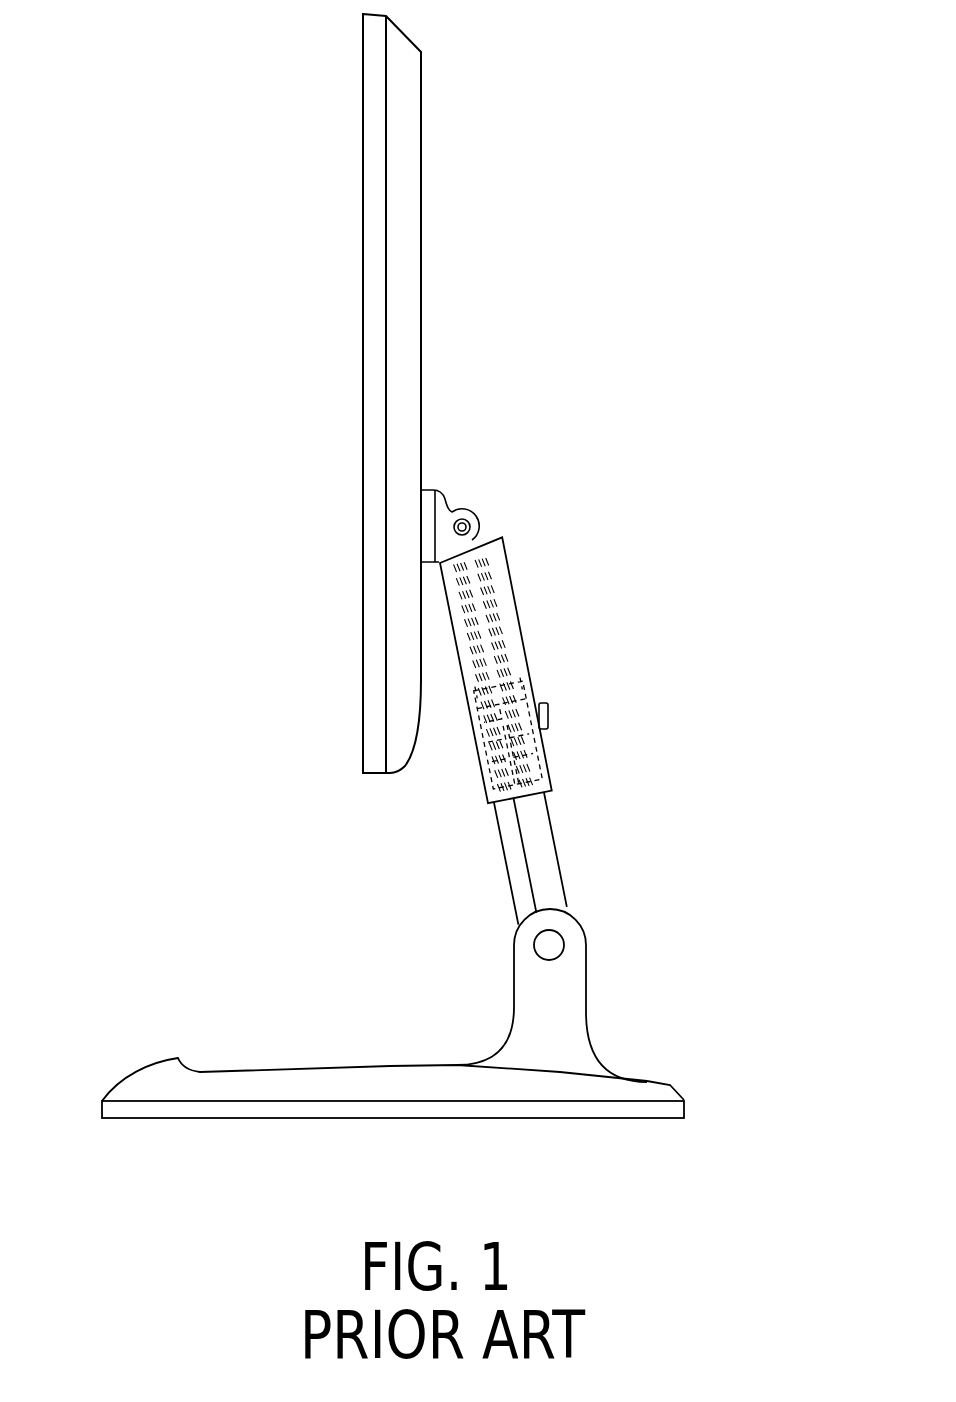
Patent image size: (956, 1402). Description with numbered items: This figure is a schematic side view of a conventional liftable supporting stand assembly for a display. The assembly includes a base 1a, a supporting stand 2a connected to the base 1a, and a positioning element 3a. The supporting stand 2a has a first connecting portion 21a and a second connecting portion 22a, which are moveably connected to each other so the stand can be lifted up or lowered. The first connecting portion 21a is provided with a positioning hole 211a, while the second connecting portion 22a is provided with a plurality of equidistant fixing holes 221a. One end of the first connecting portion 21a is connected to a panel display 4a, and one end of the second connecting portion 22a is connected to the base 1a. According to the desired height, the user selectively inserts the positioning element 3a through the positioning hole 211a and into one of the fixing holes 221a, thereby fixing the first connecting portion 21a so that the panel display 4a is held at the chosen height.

The base 1a is at (648, 1080).
The supporting stand 2a is at (733, 603).
The first connecting portion 21a is at (586, 670).
The positioning hole 211a is at (507, 733).
The fixing holes 221a is at (493, 675).
The second connecting portion 22a is at (545, 840).
The positioning element 3a is at (549, 716).
The panel display 4a is at (426, 205).